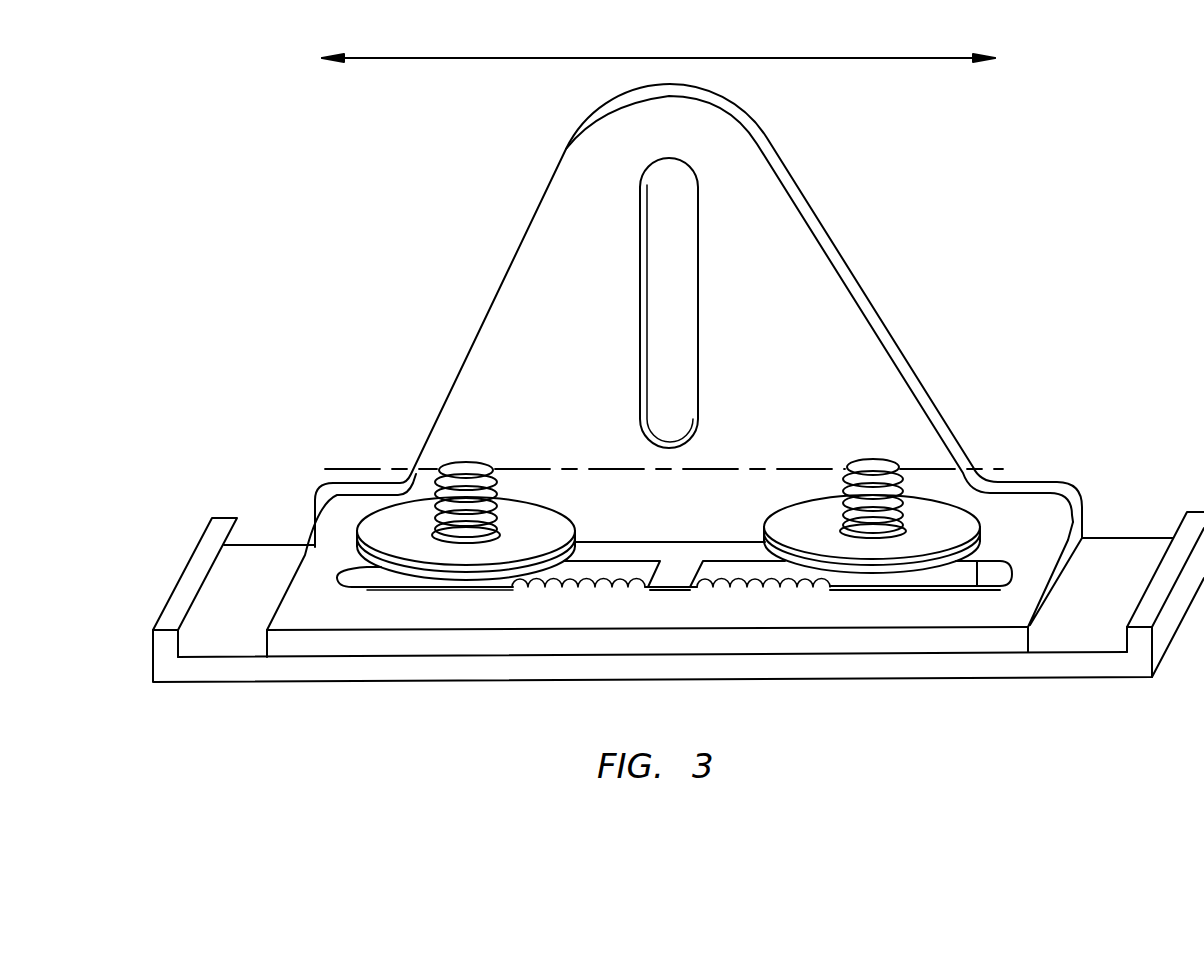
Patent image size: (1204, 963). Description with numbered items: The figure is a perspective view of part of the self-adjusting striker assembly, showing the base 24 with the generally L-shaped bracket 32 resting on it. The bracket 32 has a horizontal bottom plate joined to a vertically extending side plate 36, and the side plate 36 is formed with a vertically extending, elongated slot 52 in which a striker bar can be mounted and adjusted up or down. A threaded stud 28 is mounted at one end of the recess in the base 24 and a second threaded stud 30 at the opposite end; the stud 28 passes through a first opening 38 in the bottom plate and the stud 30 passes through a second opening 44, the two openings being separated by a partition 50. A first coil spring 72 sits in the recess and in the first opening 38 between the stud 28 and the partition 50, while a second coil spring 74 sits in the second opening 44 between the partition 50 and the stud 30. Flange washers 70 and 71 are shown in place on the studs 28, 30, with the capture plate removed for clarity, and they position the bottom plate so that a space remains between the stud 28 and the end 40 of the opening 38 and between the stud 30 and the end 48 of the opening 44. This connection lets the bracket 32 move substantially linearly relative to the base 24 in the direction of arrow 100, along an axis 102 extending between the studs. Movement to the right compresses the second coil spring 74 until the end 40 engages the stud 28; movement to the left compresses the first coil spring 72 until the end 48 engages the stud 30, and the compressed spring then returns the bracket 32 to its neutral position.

The base 24 is at (235, 682).
The threaded stud 28 is at (461, 540).
The second threaded stud 30 is at (878, 540).
The bracket 32 is at (674, 409).
The side plate 36 is at (764, 150).
The first opening 38 is at (363, 580).
The end of first opening 40 is at (352, 590).
The second opening 44 is at (953, 578).
The end of second opening 48 is at (1027, 580).
The partition 50 is at (675, 580).
The elongated slot 52 is at (668, 192).
The flange washer 70 is at (378, 527).
The flange washer 71 is at (955, 523).
The first coil spring 72 is at (603, 581).
The second coil spring 74 is at (758, 583).
The arrow 100 is at (802, 57).
The axis 102 is at (382, 468).